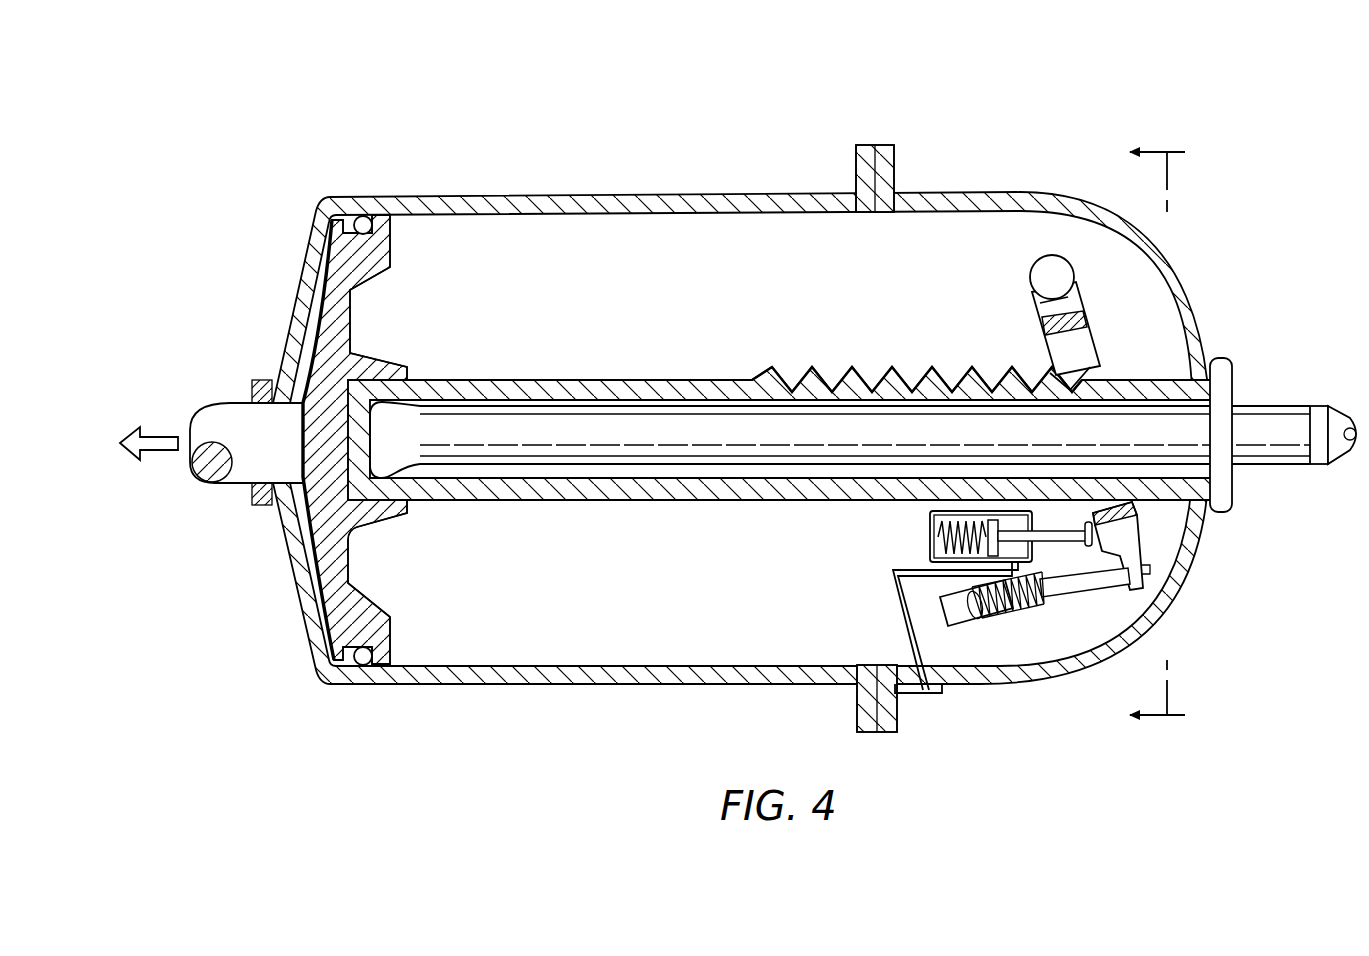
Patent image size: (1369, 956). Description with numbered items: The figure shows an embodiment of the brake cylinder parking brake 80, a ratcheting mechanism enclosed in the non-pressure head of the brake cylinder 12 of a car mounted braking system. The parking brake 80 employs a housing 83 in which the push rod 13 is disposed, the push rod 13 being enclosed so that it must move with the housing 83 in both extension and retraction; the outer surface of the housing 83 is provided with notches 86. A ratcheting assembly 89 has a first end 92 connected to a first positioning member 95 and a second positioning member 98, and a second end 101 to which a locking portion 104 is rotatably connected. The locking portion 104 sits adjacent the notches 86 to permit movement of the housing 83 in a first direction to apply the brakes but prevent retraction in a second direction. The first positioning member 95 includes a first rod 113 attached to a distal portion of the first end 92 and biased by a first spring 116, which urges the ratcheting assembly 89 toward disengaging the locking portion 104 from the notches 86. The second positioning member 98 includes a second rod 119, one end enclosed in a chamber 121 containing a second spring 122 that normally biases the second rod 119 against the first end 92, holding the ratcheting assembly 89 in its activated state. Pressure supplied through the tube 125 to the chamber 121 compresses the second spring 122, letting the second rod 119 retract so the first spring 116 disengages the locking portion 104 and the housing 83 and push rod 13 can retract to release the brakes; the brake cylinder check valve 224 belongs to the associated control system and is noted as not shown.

The brake cylinder 12 is at (730, 160).
The push rod 13 is at (1268, 428).
The brake cylinder parking brake 80 is at (1300, 158).
The housing 83 is at (781, 405).
The notches 86 is at (956, 368).
The ratcheting assembly 89 is at (1066, 309).
The first end 92 is at (1122, 540).
The first positioning member 95 is at (933, 618).
The second positioning member 98 is at (982, 596).
The second end 101 is at (1046, 268).
The locking portion 104 is at (1088, 343).
The first rod 113 is at (1058, 600).
The first spring 116 is at (1002, 620).
The second rod 119 is at (1038, 545).
The chamber 121 is at (1022, 522).
The second spring 122 is at (932, 524).
The tube 125 is at (906, 640).
The brake cylinder check valve 224 is at (189, 442).